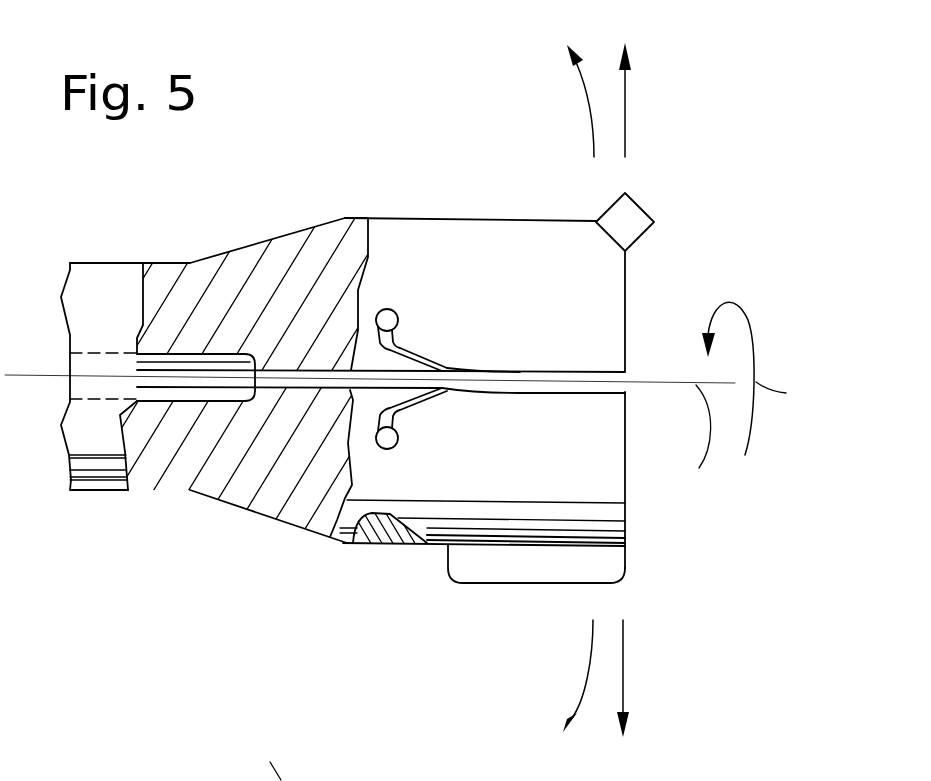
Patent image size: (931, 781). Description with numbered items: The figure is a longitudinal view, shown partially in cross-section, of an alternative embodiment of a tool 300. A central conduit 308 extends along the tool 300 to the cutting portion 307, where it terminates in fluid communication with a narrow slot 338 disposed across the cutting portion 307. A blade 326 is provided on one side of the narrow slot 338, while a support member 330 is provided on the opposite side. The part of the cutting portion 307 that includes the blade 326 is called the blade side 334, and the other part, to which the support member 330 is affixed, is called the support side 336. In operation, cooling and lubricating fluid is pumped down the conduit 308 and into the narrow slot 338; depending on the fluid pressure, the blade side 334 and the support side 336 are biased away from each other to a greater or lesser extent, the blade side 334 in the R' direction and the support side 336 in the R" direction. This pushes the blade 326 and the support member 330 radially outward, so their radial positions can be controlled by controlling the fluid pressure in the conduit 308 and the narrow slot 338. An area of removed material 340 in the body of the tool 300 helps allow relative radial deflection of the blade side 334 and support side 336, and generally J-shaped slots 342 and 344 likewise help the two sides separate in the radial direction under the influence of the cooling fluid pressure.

The tool 300 is at (289, 106).
The cutting portion 307 is at (358, 218).
The central conduit 308 is at (185, 354).
The blade 326 is at (643, 205).
The support member 330 is at (592, 583).
The blade side 334 is at (493, 260).
The support side 336 is at (503, 478).
The narrow slot 338 is at (562, 372).
The area of removed material 340 is at (387, 537).
The J-shaped slot 342 is at (390, 308).
The J-shaped slot 344 is at (374, 440).